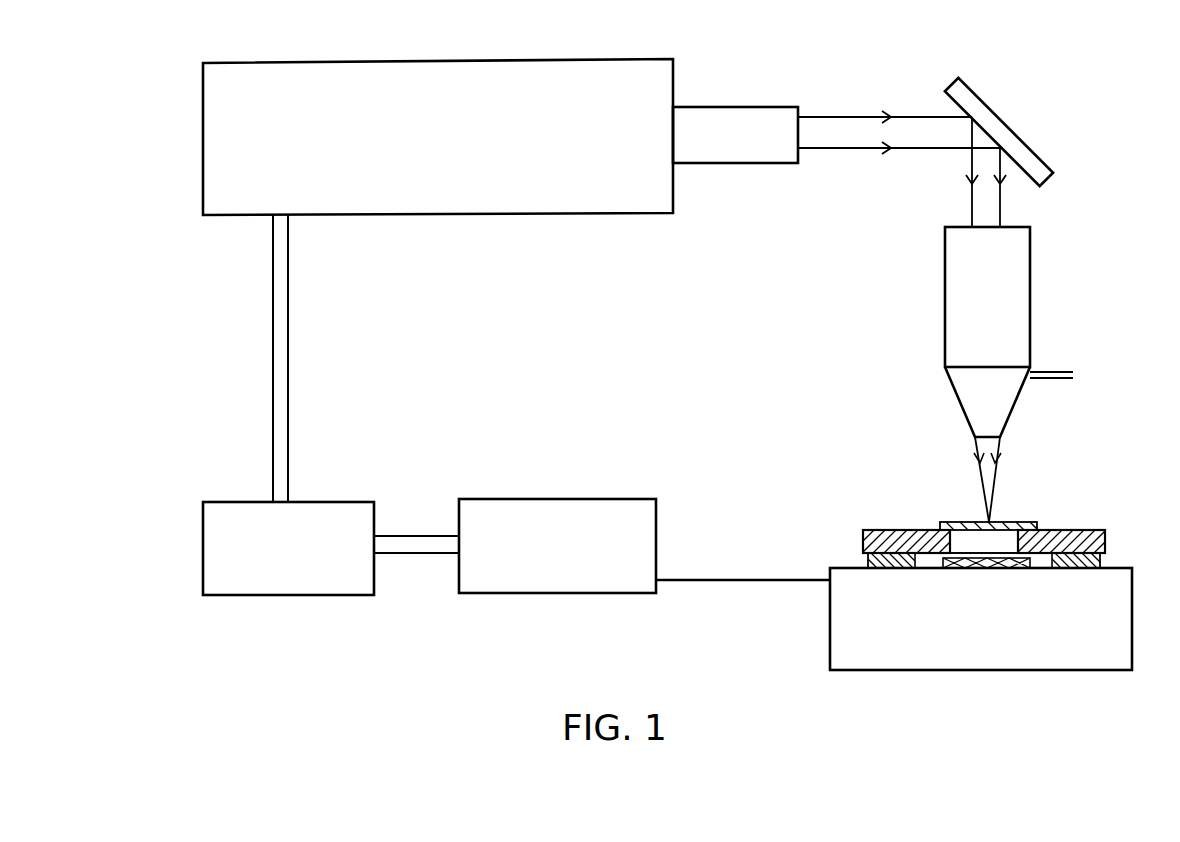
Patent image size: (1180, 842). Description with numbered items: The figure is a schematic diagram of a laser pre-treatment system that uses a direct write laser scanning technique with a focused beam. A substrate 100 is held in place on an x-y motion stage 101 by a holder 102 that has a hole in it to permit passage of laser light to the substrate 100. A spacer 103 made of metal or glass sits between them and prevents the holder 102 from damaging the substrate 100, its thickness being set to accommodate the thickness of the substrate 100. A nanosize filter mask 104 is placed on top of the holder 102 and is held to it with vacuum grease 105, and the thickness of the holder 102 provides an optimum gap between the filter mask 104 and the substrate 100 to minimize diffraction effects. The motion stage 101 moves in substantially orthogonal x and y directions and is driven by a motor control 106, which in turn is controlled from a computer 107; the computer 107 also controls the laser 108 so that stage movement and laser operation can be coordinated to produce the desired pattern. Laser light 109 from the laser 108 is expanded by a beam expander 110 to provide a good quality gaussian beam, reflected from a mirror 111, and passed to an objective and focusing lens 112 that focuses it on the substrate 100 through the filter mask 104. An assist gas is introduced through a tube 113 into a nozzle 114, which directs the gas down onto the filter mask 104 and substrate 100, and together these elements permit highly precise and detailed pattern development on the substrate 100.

The substrate 100 is at (962, 568).
The x-y motion stage 101 is at (970, 628).
The holder 102 is at (883, 543).
The spacer 103 is at (878, 562).
The nanosize filter mask 104 is at (960, 527).
The vacuum grease 105 is at (940, 527).
The motor control 106 is at (505, 498).
The computer 107 is at (356, 500).
The laser 108 is at (538, 188).
The laser light 109 is at (822, 117).
The beam expander 110 is at (738, 143).
The mirror 111 is at (1015, 147).
The objective and focusing lens 112 is at (975, 325).
The tube 113 is at (1052, 368).
The nozzle 114 is at (993, 417).